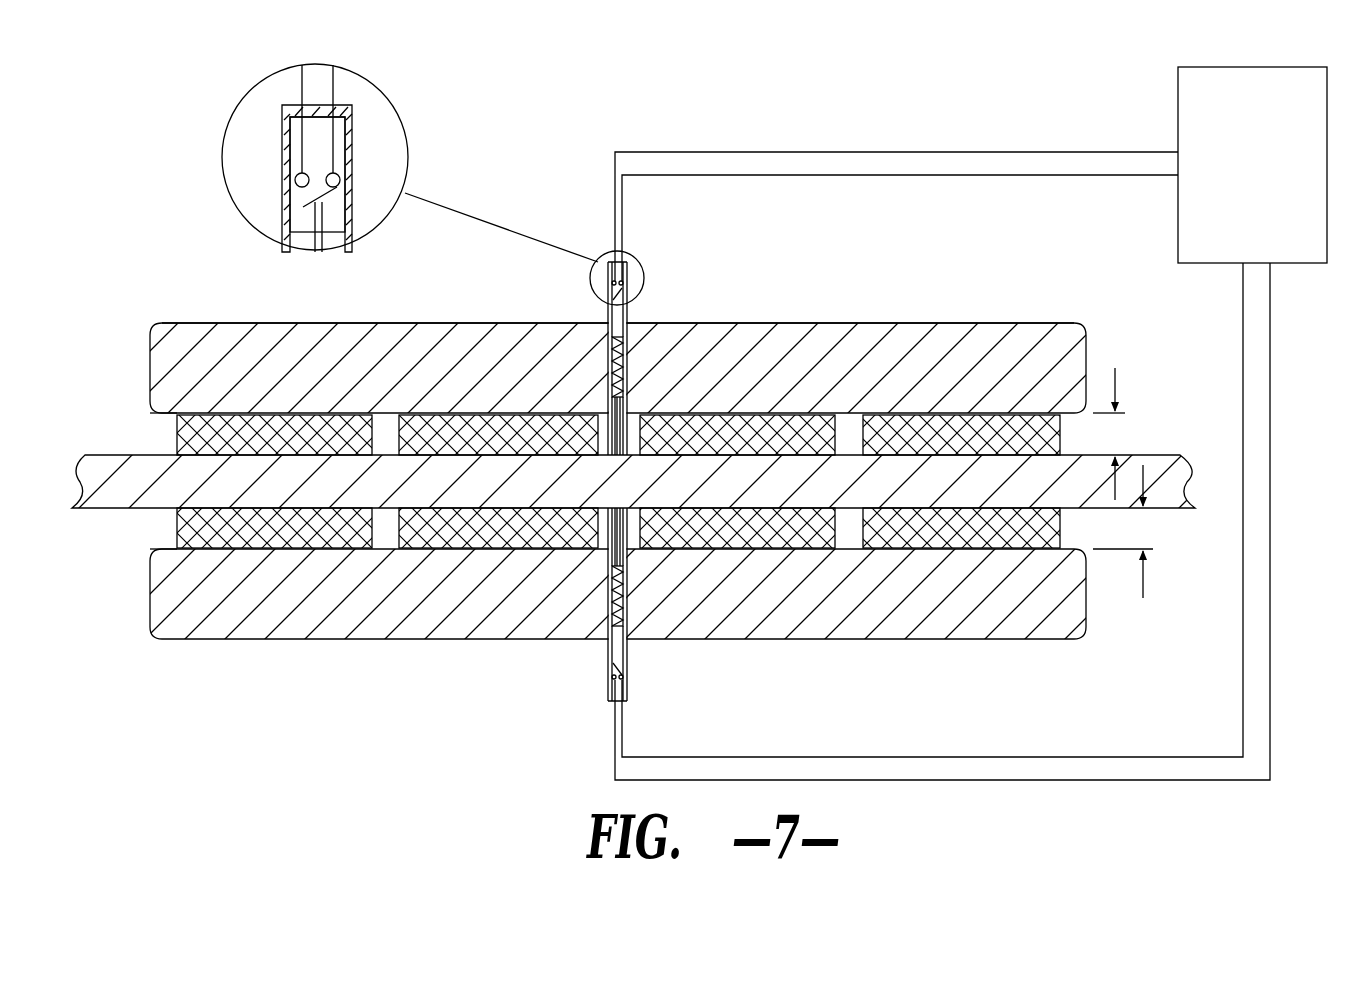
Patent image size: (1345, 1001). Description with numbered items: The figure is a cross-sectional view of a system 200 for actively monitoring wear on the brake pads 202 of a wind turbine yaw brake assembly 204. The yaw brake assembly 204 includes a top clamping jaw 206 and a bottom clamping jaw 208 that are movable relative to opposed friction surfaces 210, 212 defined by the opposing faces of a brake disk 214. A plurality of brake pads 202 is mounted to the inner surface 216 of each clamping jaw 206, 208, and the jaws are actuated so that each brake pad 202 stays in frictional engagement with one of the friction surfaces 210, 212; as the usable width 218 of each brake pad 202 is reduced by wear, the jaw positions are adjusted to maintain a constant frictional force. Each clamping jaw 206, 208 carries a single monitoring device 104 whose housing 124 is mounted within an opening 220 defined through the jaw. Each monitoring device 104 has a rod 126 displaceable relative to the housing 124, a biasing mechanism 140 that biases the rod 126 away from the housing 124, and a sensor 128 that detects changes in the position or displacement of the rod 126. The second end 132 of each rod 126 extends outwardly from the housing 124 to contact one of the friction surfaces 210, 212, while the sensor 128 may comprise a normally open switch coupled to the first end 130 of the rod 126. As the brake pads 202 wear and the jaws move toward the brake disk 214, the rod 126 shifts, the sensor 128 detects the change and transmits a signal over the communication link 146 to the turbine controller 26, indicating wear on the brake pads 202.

The system 200 is at (344, 163).
The turbine controller 26 is at (1236, 168).
The monitoring device 104 is at (645, 307).
The housing 124 is at (606, 313).
The rod 126 is at (326, 240).
The sensor 128 is at (354, 147).
The first end 130 is at (288, 218).
The second end 132 is at (617, 433).
The biasing mechanism 140 is at (343, 222).
The communication link 146 is at (915, 177).
The brake pad 202 is at (290, 430).
The yaw brake assembly 204 is at (960, 321).
The top clamping jaw 206 is at (228, 334).
The bottom clamping jaw 208 is at (221, 625).
The friction surface 210 is at (1163, 452).
The friction surface 212 is at (1172, 512).
The brake disk 214 is at (1198, 482).
The inner surface 216 is at (164, 418).
The usable width 218 is at (1112, 432).
The opening 220 is at (612, 343).